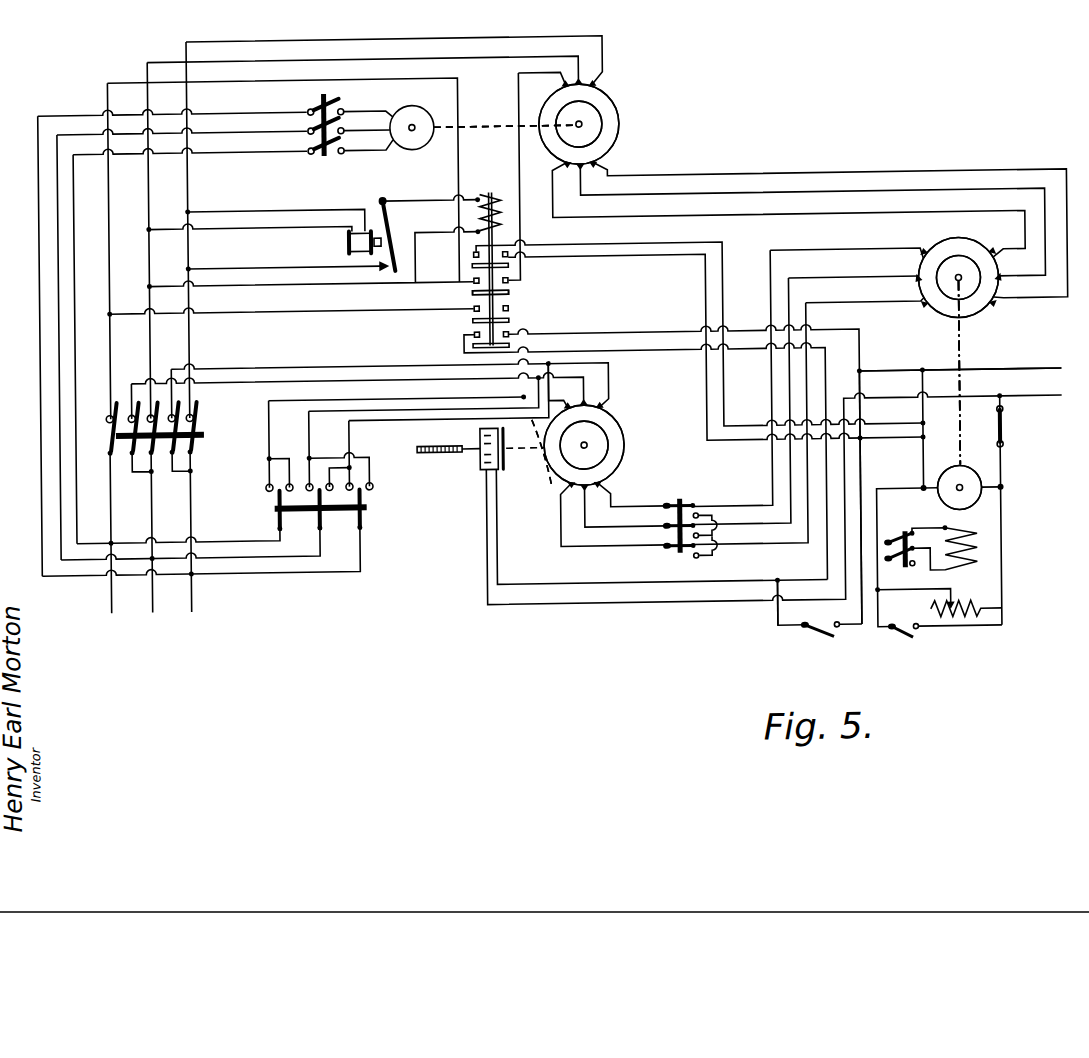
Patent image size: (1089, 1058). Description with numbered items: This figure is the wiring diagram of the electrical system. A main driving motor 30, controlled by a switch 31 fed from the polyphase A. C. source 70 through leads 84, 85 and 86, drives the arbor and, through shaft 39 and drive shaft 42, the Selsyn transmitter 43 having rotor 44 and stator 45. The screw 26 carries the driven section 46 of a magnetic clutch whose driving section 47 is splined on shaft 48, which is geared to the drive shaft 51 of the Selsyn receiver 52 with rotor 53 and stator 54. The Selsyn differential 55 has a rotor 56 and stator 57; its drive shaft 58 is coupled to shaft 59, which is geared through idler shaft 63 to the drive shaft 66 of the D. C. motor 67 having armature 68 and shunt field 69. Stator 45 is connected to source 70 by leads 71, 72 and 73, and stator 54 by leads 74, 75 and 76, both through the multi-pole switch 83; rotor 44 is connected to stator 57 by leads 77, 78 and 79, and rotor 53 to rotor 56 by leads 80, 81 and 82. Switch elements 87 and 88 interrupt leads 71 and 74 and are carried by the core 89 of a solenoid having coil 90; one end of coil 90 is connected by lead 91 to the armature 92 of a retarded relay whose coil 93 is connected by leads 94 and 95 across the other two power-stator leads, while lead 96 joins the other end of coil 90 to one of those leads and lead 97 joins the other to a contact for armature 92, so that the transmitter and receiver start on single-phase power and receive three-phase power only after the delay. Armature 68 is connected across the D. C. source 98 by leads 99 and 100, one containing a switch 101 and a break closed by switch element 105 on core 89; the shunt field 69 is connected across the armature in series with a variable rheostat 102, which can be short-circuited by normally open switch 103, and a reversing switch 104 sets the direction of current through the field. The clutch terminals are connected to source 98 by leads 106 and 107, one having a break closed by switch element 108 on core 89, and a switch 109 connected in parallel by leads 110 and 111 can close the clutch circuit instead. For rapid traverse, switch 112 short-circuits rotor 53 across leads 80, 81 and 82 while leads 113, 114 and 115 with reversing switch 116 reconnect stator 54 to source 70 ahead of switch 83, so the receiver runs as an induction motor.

The screw 26 is at (426, 447).
The main driving motor 30 is at (399, 112).
The switch 31 is at (337, 104).
The shaft 39 is at (505, 126).
The drive shaft 42 is at (505, 126).
The motor (Selsyn transmitter) 43 is at (620, 127).
The rotor 44 is at (590, 136).
The stator 45 is at (597, 104).
The driven section of magnetic clutch 46 is at (475, 480).
The driving section of magnetic clutch 47 is at (504, 466).
The shaft 48 is at (538, 486).
The drive shaft 51 is at (542, 452).
The motor (Selsyn receiver) 52 is at (620, 448).
The rotor 53 is at (604, 460).
The stator 54 is at (618, 459).
The motor (Selsyn differential) 55 is at (994, 325).
The rotor 56 is at (950, 308).
The stator 57 is at (962, 312).
The drive shaft 58 is at (958, 383).
The shaft 59 is at (960, 372).
The idler shaft 63 is at (960, 372).
The drive shaft 66 is at (960, 372).
The D. C. motor 67 is at (957, 477).
The armature 68 is at (942, 508).
The shunt field 69 is at (962, 542).
The source of polyphase A. C. voltage 70 is at (106, 610).
The lead 71 is at (108, 187).
The lead 72 is at (148, 187).
The lead 73 is at (188, 187).
The lead 74 is at (318, 314).
The lead 75 is at (245, 388).
The lead 76 is at (280, 369).
The lead 77 is at (823, 182).
The lead 78 is at (823, 202).
The lead 79 is at (817, 224).
The lead 80 is at (856, 320).
The lead 81 is at (842, 292).
The lead 82 is at (838, 268).
The multi-pole switch 83 is at (194, 441).
The lead 84 is at (43, 284).
The lead 85 is at (61, 318).
The lead 86 is at (72, 343).
The switch element 87 is at (507, 297).
The switch element 88 is at (464, 325).
The solenoid core 89 is at (505, 298).
The solenoid coil 90 is at (490, 206).
The lead 91 is at (415, 205).
The relay armature 92 is at (474, 124).
The relay coil 93 is at (355, 252).
The lead 94 is at (276, 213).
The lead 95 is at (293, 228).
The lead 96 is at (278, 292).
The lead 97 is at (212, 272).
The source of D. C. voltage 98 is at (1050, 395).
The lead 99 is at (702, 290).
The lead 100 is at (1025, 420).
The circuit-controlling switch 101 is at (998, 445).
The variable rheostat 102 is at (962, 618).
The normally open switch 103 is at (891, 650).
The reversing switch 104 is at (902, 578).
The switch element 105 is at (470, 268).
The lead 106 is at (612, 341).
The lead 107 is at (590, 609).
The switch element 108 is at (467, 352).
The switch 109 is at (796, 646).
The lead 110 is at (769, 628).
The lead 111 is at (856, 478).
The switch 112 is at (694, 562).
The lead 113 is at (233, 541).
The lead 114 is at (253, 574).
The lead 115 is at (303, 575).
The switch 116 is at (333, 514).